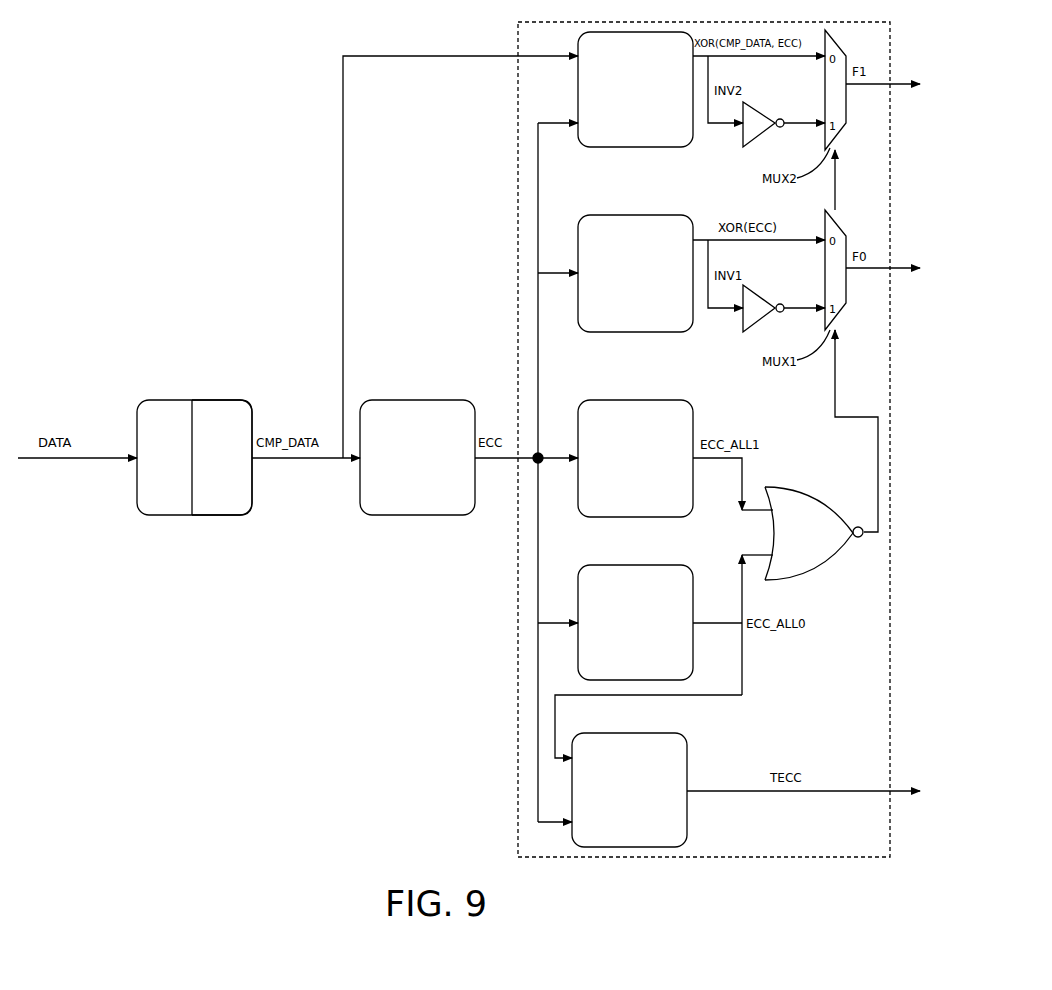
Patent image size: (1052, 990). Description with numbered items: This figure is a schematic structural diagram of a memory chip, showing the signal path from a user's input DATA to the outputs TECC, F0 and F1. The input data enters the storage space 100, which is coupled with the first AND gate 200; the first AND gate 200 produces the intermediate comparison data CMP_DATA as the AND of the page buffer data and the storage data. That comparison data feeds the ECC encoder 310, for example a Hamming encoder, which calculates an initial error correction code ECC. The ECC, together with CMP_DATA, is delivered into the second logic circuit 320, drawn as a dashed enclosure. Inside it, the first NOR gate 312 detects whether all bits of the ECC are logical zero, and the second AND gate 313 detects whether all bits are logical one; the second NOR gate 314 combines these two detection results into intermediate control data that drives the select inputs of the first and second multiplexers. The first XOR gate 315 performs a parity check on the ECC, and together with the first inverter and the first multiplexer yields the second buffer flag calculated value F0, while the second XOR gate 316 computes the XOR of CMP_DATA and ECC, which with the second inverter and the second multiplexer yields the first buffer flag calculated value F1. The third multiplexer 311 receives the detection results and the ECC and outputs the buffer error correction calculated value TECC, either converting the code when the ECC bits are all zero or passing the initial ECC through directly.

The storage space 100 is at (157, 515).
The first AND gate 200 is at (212, 400).
The ECC encoder 310 is at (390, 515).
The third multiplexer 311 is at (588, 752).
The first NOR gate 312 is at (620, 580).
The second AND gate 313 is at (600, 415).
The second NOR gate 314 is at (822, 562).
The first XOR gate 315 is at (625, 232).
The second XOR gate 316 is at (633, 130).
The second logic circuit 320 is at (518, 710).